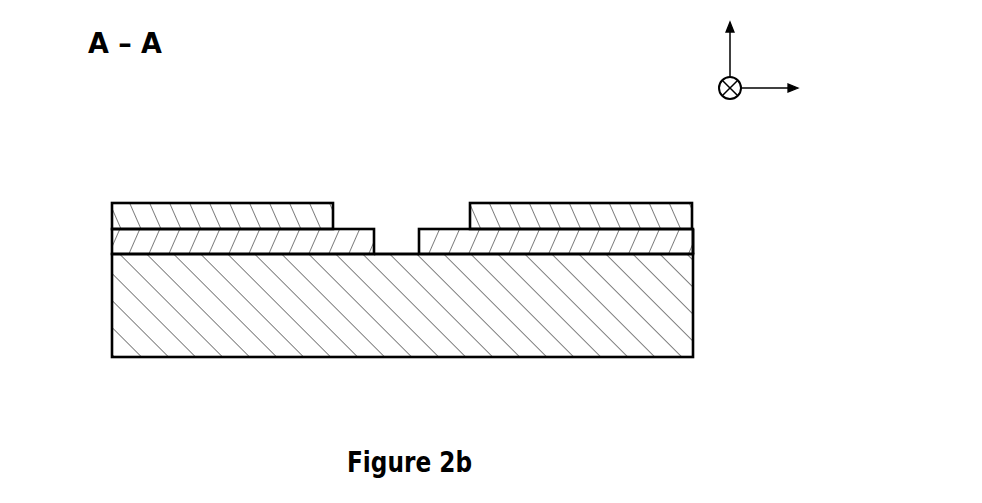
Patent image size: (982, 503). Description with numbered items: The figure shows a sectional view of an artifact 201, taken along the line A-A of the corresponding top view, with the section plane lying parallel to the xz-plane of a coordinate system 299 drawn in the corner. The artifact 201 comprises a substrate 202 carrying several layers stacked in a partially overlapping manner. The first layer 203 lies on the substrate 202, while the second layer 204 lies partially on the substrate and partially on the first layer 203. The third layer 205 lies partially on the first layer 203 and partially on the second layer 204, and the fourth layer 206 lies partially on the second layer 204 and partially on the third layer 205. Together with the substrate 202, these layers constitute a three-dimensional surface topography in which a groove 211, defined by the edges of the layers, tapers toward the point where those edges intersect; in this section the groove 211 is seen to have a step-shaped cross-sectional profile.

The artifact 201 is at (410, 223).
The substrate 202 is at (411, 315).
The first layer 203 is at (112, 240).
The second layer 204 is at (693, 240).
The third layer 205 is at (181, 203).
The fourth layer 206 is at (553, 203).
The groove 211 is at (358, 173).
The coordinate system 299 is at (791, 68).